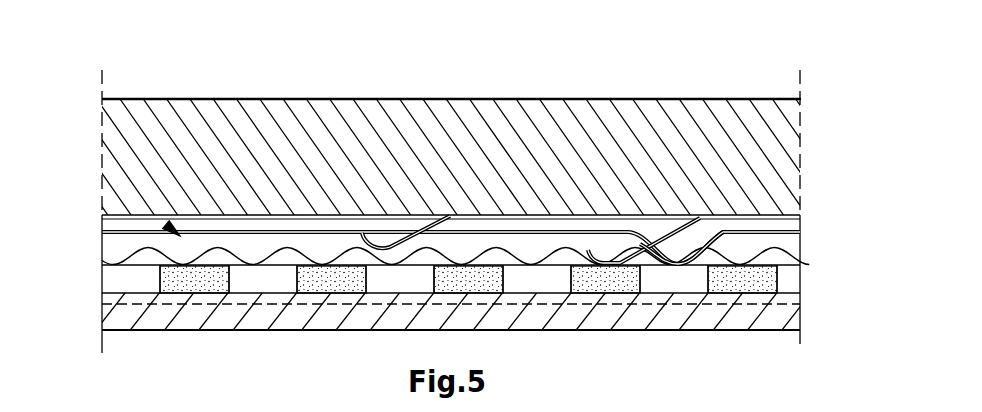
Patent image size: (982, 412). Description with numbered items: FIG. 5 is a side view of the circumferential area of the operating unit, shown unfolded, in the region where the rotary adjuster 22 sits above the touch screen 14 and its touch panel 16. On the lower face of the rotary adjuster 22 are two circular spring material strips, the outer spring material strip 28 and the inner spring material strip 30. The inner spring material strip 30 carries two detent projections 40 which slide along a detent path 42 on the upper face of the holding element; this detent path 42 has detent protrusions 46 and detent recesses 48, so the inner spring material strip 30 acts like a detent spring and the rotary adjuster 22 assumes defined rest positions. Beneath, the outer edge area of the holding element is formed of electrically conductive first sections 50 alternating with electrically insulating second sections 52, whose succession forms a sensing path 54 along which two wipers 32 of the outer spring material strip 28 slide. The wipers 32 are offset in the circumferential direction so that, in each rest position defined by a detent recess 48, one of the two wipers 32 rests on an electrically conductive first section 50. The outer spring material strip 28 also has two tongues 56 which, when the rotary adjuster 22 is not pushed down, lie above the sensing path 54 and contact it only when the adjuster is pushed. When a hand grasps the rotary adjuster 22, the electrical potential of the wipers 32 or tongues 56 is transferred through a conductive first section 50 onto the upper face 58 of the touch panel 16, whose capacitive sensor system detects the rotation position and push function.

The touch screen 14 is at (168, 315).
The touch panel 16 is at (118, 300).
The rotary adjuster 22 is at (218, 137).
The outer spring material strip 28 is at (783, 212).
The inner spring material strip 30 is at (760, 228).
The wipers 32 is at (671, 238).
The detent projections 40 is at (682, 262).
The detent path 42 is at (170, 228).
The detent protrusions 46 is at (292, 247).
The detent recesses 48 is at (323, 263).
The electrically conductive first sections 50 is at (327, 283).
The electrically insulating second sections 52 is at (262, 282).
The sensing path 54 is at (84, 277).
The tongues 56 is at (405, 236).
The upper face of the touch panel 58 is at (785, 291).